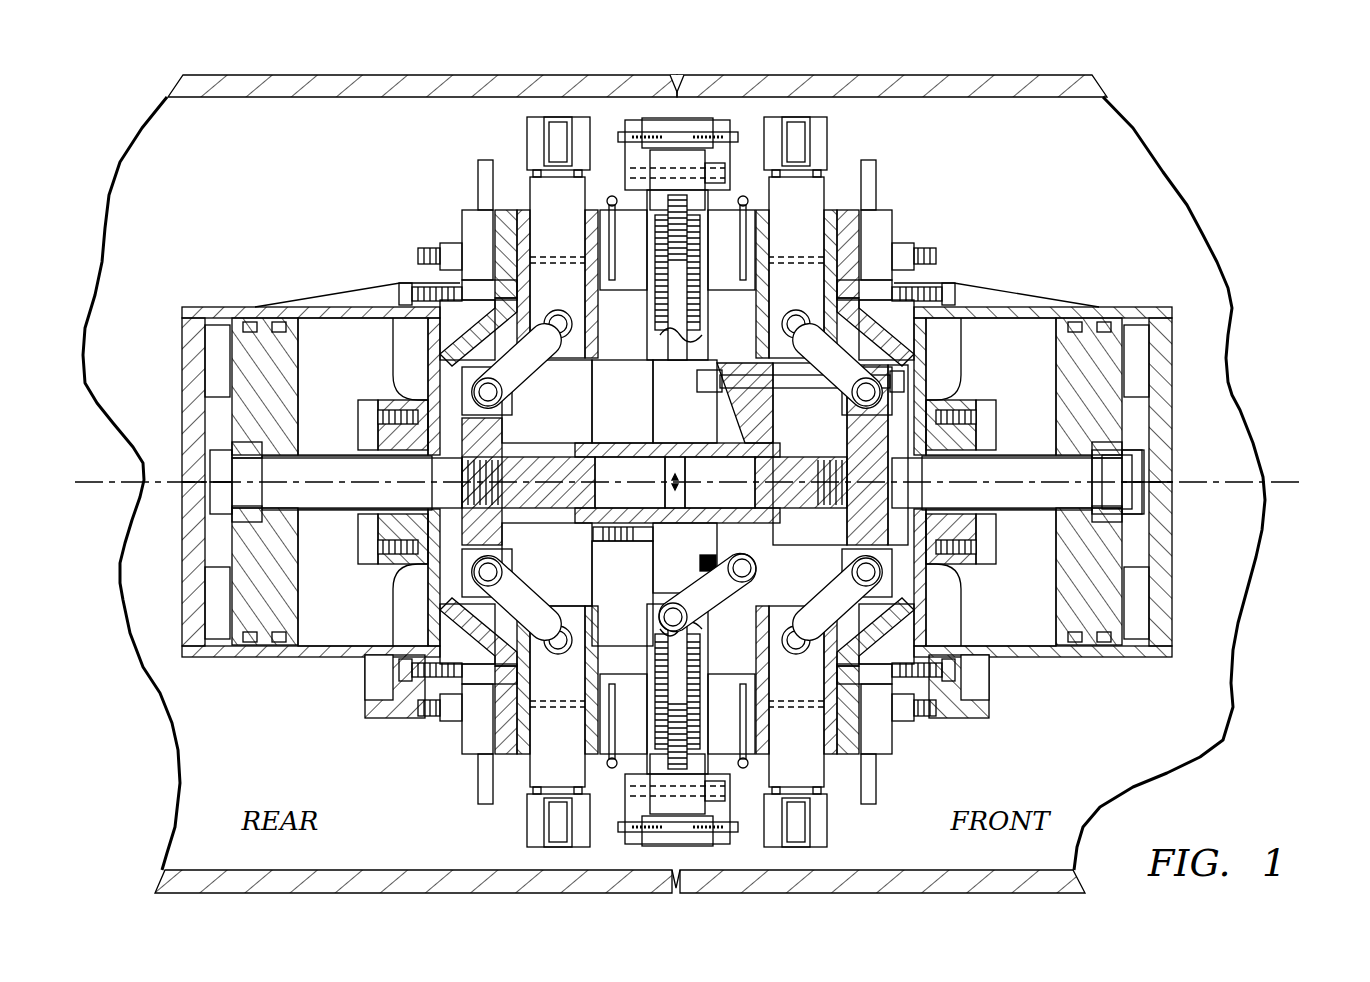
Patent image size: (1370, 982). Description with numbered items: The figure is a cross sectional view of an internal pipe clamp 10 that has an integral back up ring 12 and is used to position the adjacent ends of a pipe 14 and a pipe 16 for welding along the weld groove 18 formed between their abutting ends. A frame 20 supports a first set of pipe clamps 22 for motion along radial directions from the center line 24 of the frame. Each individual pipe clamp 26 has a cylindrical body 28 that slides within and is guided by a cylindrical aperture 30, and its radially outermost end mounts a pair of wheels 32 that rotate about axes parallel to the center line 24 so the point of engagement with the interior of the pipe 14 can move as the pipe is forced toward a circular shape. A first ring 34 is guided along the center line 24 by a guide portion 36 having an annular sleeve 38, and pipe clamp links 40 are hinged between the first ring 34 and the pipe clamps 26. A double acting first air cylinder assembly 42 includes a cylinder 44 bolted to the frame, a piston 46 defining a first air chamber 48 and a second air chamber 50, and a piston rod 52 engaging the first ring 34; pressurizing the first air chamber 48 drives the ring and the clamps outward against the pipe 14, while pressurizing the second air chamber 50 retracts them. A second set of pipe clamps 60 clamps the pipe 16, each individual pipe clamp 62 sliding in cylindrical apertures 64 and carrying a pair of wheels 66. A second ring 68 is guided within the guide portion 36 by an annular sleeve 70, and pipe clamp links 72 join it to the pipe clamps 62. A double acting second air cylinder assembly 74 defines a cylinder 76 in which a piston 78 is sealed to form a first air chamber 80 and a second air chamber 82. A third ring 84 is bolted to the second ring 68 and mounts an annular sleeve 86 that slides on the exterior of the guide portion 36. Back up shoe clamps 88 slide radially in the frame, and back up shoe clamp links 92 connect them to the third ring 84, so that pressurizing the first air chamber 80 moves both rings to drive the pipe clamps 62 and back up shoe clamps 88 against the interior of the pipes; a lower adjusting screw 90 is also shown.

The internal pipe clamp 10 is at (995, 210).
The integral back up ring 12 is at (614, 112).
The pipe 14 is at (445, 74).
The pipe 16 is at (832, 74).
The weld groove 18 is at (680, 74).
The frame 20 is at (870, 196).
The first set of pipe clamps 22 is at (511, 164).
The center line 24 is at (698, 458).
The pipe clamp 26 is at (544, 226).
The cylindrical body 28 is at (540, 684).
The cylindrical aperture 30 is at (522, 744).
The wheels 32 is at (548, 850).
The first ring 34 is at (548, 455).
The guide portion 36 is at (628, 418).
The annular sleeve 38 is at (640, 482).
The pipe clamp links 40 is at (500, 362).
The first air cylinder assembly 42 is at (302, 280).
The cylinder 44 is at (240, 655).
The piston 46 is at (250, 594).
The first air chamber 48 is at (216, 337).
The second air chamber 50 is at (325, 364).
The piston rod 52 is at (332, 508).
The second set of pipe clamps 60 is at (842, 826).
The pipe clamp 62 is at (784, 689).
The cylindrical apertures 64 is at (825, 756).
The wheels 66 is at (796, 851).
The second ring 68 is at (803, 498).
The annular sleeve 70 is at (720, 482).
The pipe clamp links 72 is at (830, 590).
The second air cylinder assembly 74 is at (1052, 280).
The cylinder 76 is at (1114, 658).
The piston 78 is at (1075, 604).
The first air chamber 80 is at (1138, 337).
The second air chamber 82 is at (997, 364).
The third ring 84 is at (713, 407).
The annular sleeve 86 is at (712, 536).
The back up shoe clamps 88 is at (634, 646).
The lower adjusting screw 90 is at (706, 700).
The back up shoe clamp links 92 is at (706, 622).